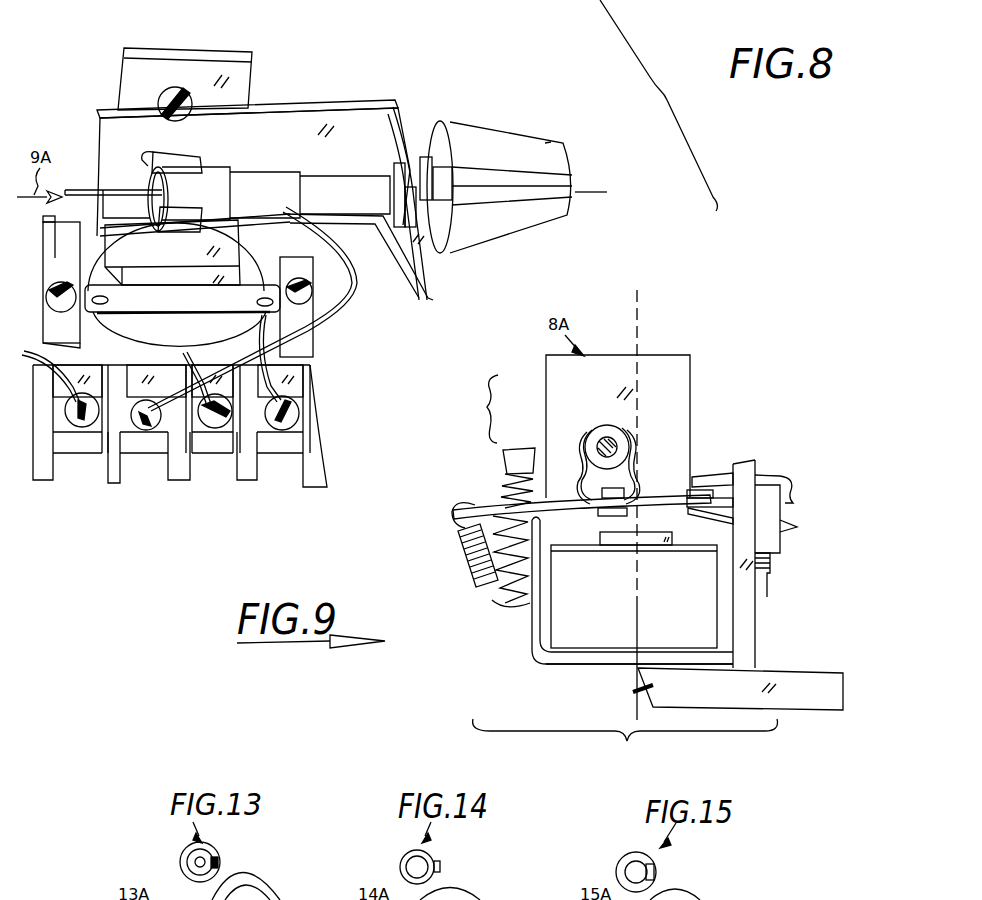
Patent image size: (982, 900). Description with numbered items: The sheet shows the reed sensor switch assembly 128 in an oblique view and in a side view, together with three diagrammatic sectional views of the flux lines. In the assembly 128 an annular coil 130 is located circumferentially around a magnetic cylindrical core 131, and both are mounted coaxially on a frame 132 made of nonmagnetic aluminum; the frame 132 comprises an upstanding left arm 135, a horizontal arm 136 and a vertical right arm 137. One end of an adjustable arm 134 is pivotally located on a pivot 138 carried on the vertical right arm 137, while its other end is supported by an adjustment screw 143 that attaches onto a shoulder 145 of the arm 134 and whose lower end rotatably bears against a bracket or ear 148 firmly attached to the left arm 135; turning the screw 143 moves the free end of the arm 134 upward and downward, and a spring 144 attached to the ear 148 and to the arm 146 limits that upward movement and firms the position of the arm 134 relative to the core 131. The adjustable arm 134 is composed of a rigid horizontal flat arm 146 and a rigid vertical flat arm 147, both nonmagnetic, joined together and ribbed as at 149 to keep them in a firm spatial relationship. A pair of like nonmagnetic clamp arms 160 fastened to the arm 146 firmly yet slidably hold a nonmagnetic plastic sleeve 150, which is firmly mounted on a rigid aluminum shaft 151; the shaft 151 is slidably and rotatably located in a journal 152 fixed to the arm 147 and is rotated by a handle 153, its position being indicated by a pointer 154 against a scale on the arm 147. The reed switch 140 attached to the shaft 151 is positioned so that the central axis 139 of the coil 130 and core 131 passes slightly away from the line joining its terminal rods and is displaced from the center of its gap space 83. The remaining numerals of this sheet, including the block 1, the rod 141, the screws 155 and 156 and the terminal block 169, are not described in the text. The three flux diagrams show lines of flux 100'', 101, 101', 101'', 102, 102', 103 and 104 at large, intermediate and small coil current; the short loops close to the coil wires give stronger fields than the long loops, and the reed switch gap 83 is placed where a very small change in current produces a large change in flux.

In FIG. 8, the mounting block 1 is at (228, 72).
In FIG. 13, the gap space 83 is at (215, 857).
In FIG. 14, the gap space 83 is at (495, 872).
In FIG. 15, the gap space 83 is at (655, 874).
In FIG. 15, the line of flux 100'' is at (666, 859).
In FIG. 13, the line of flux 101 is at (161, 864).
In FIG. 14, the line of flux 101' is at (403, 860).
In FIG. 15, the line of flux 101'' is at (619, 872).
In FIG. 13, the line of flux 102 is at (158, 853).
In FIG. 14, the line of flux 102' is at (448, 857).
In FIG. 13, the line of flux 103 is at (194, 862).
In FIG. 13, the line of flux 104 is at (219, 862).
In FIG. 8, the reed sensor switch assembly 128 is at (658, 105).
In FIG. 9, the annular coil 130 is at (562, 620).
In FIG. 9, the magnetic cylindrical core 131 is at (646, 544).
In FIG. 9, the frame 132 is at (625, 748).
In FIG. 8, the adjustable arm 134 is at (337, 37).
In FIG. 9, the adjustable arm 134 is at (470, 409).
In FIG. 9, the upstanding left arm 135 is at (534, 642).
In FIG. 9, the horizontal arm 136 is at (585, 665).
In FIG. 8, the vertical right arm 137 is at (237, 272).
In FIG. 9, the vertical right arm 137 is at (745, 637).
In FIG. 9, the pivot 138 is at (735, 481).
In FIG. 9, the central axis 139 is at (636, 708).
In FIG. 8, the reed switch 140 is at (132, 187).
In FIG. 9, the reed switch 140 is at (630, 452).
In FIG. 8, the plunger rod 141 is at (98, 187).
In FIG. 9, the plunger rod 141 is at (615, 445).
In FIG. 8, the adjustment screw 143 is at (160, 98).
In FIG. 9, the adjustment screw 143 is at (500, 480).
In FIG. 9, the spring 144 is at (498, 578).
In FIG. 9, the shoulder 145 is at (458, 522).
In FIG. 8, the horizontally extending flat arm 146 is at (312, 112).
In FIG. 9, the horizontally extending flat arm 146 is at (577, 501).
In FIG. 8, the vertically extending flat arm 147 is at (402, 120).
In FIG. 9, the vertically extending flat arm 147 is at (546, 405).
In FIG. 9, the bracket or ear 148 is at (495, 605).
In FIG. 8, the rib 149 is at (430, 300).
In FIG. 8, the sleeve 150 is at (257, 171).
In FIG. 8, the rigid shaft 151 is at (342, 175).
In FIG. 8, the journal 152 is at (421, 162).
In FIG. 8, the handle 153 is at (542, 147).
In FIG. 8, the pointer 154 is at (610, 189).
In FIG. 8, the terminal screw 155 is at (218, 423).
In FIG. 8, the terminal screw 156 is at (285, 423).
In FIG. 8, the clamp arm 160 is at (188, 156).
In FIG. 9, the clamp arm 160 is at (592, 426).
In FIG. 8, the terminal block 169 is at (325, 443).
In FIG. 9, the terminal block 169 is at (818, 670).